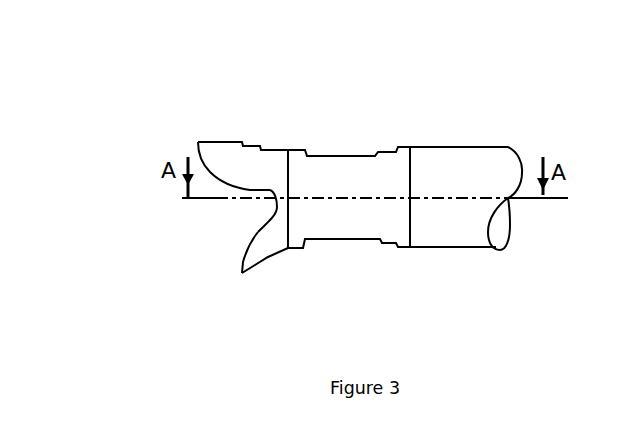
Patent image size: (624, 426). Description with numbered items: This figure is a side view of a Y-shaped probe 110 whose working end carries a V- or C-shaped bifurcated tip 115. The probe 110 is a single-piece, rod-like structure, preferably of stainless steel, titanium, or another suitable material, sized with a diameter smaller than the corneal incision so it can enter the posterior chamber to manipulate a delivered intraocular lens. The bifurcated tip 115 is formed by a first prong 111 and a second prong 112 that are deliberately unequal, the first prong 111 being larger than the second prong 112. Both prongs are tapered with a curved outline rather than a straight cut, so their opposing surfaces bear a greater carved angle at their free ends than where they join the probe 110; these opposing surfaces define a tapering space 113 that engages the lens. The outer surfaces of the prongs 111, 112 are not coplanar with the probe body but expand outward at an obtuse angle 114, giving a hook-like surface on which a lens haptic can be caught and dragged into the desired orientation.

The probe 110 is at (472, 97).
The first prong 111 is at (232, 160).
The second prong 112 is at (267, 242).
The tapering space 113 is at (248, 203).
The obtuse angle 114 is at (278, 147).
The bifurcated tip 115 is at (280, 205).